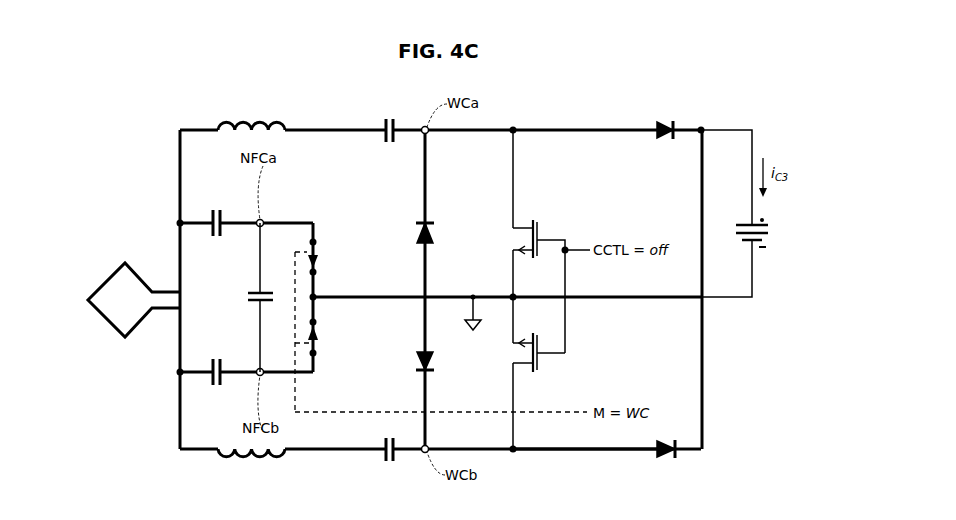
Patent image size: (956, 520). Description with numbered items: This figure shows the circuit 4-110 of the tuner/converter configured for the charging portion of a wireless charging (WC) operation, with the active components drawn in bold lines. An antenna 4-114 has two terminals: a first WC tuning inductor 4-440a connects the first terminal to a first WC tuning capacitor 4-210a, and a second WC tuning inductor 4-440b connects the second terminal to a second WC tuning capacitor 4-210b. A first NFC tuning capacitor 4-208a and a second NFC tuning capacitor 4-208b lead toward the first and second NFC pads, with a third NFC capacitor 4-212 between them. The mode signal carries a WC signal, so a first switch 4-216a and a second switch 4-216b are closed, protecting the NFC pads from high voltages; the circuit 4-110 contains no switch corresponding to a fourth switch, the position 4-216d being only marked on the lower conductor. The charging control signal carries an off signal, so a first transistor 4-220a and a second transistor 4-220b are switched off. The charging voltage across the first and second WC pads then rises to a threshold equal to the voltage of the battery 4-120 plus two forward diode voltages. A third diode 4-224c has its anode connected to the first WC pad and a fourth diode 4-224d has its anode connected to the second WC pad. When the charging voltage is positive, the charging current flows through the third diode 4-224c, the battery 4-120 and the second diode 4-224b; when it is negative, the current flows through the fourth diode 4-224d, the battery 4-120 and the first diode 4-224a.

The circuit 4-110 is at (141, 87).
The antenna 4-114 is at (110, 273).
The first WC tuning inductor 4-440a is at (258, 120).
The second WC tuning inductor 4-440b is at (258, 462).
The first NFC tuning capacitor 4-208a is at (212, 210).
The capacitor 4-208b is at (212, 384).
The third NFC capacitor 4-212 is at (250, 292).
The first WC tuning capacitor 4-210a is at (383, 124).
The second WC tuning capacitor 4-210b is at (383, 456).
The first switch 4-216a is at (316, 252).
The second switch 4-216b is at (310, 343).
The node / wire 4-216d is at (585, 468).
The first diode 4-224a is at (433, 222).
The second diode 4-224b is at (433, 371).
The third diode 4-224c is at (674, 124).
The fourth diode 4-224d is at (676, 453).
The first transistor 4-220a is at (538, 226).
The second transistor 4-220b is at (538, 368).
The battery 4-120 is at (766, 242).